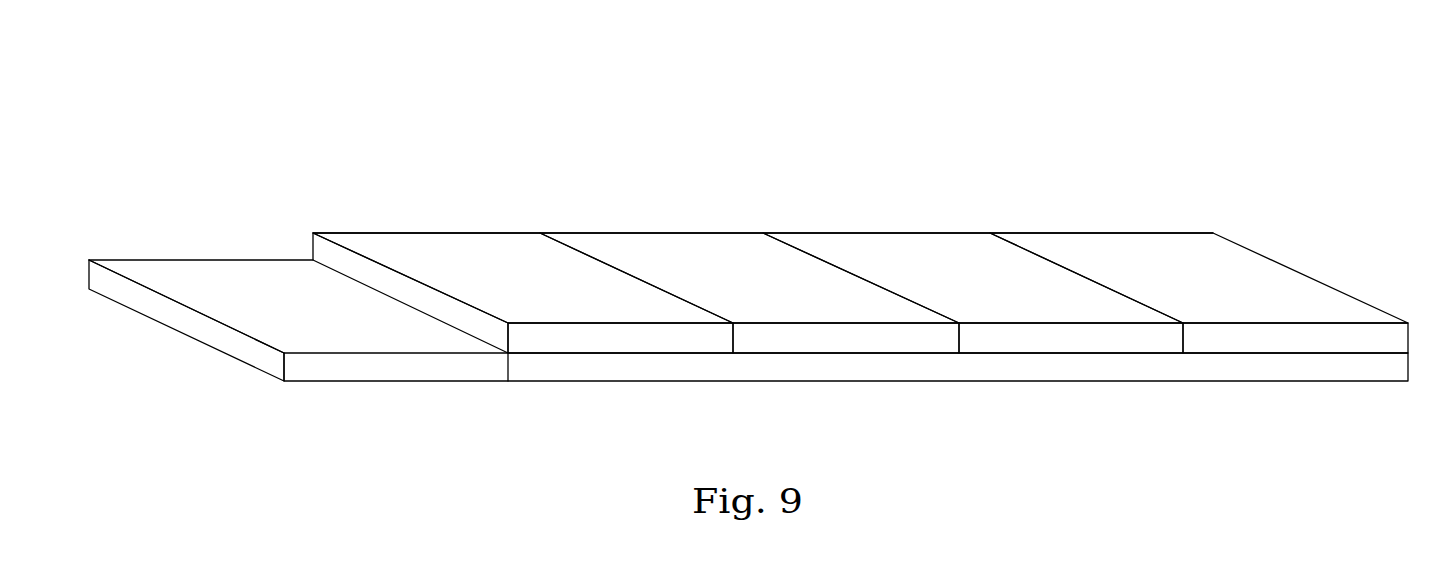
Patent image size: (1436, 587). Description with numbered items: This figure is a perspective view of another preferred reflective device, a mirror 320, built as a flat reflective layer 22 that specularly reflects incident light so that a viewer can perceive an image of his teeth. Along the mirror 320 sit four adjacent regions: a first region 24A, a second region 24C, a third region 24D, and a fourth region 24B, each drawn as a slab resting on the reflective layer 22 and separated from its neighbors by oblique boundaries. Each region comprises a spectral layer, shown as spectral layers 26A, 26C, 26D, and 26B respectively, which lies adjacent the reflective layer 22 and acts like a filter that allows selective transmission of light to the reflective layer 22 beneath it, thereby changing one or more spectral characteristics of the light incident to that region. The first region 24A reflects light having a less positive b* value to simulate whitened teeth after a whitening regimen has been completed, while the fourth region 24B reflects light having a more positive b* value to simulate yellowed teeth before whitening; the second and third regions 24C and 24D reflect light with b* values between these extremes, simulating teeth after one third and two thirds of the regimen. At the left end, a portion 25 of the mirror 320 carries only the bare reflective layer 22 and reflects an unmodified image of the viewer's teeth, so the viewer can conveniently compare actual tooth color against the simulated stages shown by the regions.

The mirror 320 is at (1112, 86).
The reflective layer 22 is at (965, 371).
The portion of the reflective layer 25 is at (210, 198).
The first region 24A is at (581, 265).
The fourth region 24B is at (1255, 266).
The second region 24C is at (805, 266).
The third region 24D is at (1029, 266).
The spectral layer 26A is at (610, 339).
The spectral layer 26B is at (1285, 340).
The spectral layer 26C is at (835, 339).
The spectral layer 26D is at (1058, 339).